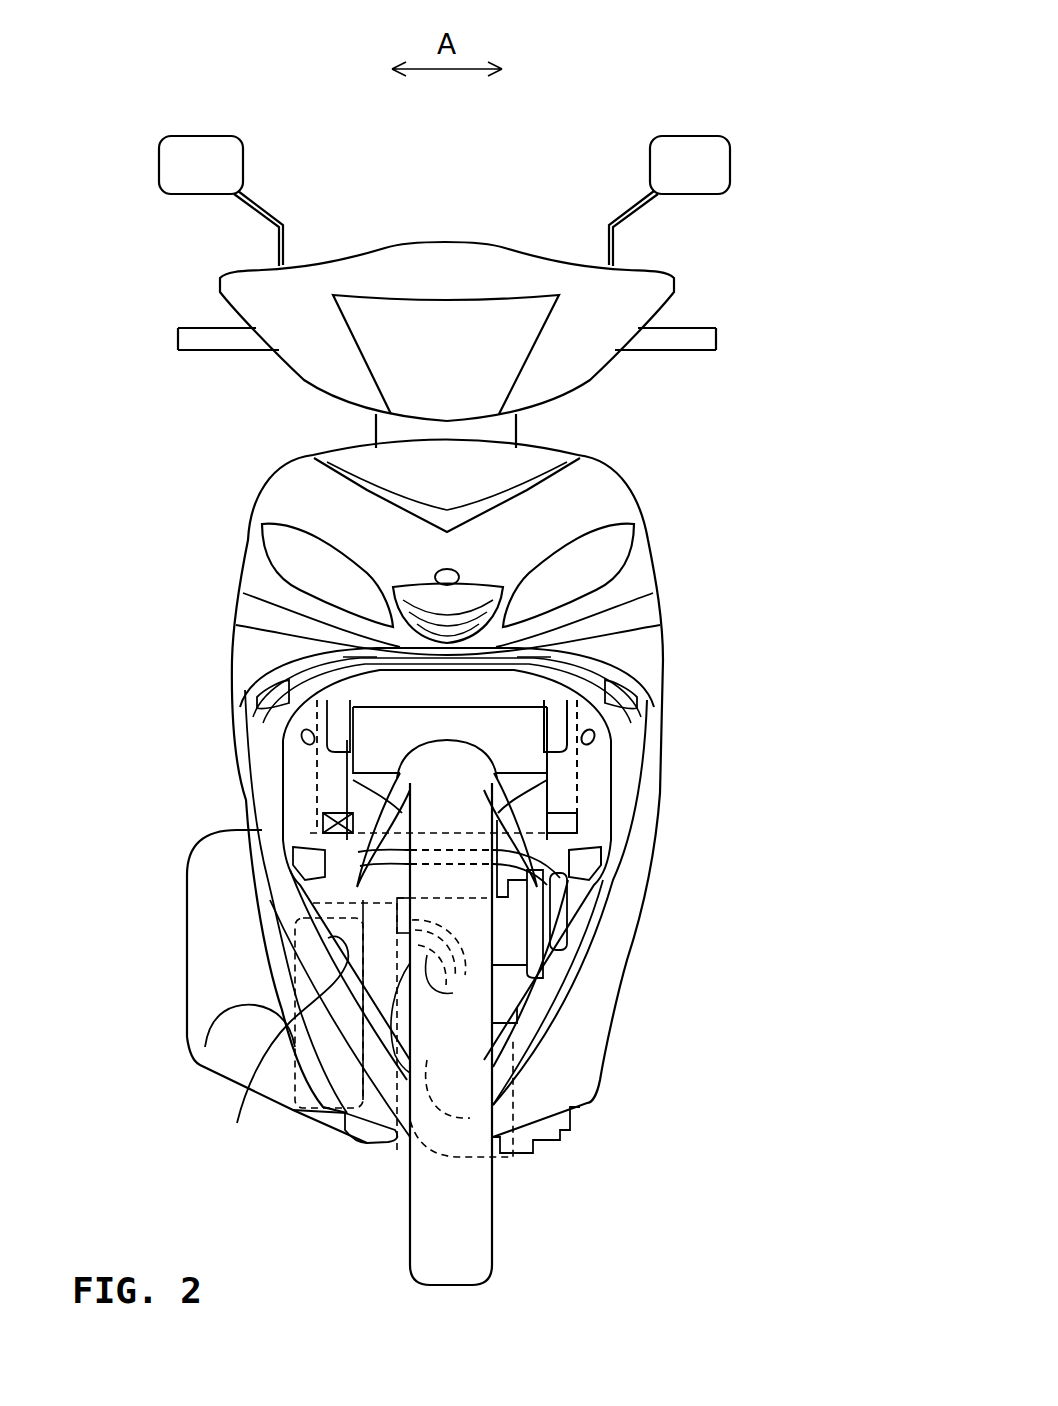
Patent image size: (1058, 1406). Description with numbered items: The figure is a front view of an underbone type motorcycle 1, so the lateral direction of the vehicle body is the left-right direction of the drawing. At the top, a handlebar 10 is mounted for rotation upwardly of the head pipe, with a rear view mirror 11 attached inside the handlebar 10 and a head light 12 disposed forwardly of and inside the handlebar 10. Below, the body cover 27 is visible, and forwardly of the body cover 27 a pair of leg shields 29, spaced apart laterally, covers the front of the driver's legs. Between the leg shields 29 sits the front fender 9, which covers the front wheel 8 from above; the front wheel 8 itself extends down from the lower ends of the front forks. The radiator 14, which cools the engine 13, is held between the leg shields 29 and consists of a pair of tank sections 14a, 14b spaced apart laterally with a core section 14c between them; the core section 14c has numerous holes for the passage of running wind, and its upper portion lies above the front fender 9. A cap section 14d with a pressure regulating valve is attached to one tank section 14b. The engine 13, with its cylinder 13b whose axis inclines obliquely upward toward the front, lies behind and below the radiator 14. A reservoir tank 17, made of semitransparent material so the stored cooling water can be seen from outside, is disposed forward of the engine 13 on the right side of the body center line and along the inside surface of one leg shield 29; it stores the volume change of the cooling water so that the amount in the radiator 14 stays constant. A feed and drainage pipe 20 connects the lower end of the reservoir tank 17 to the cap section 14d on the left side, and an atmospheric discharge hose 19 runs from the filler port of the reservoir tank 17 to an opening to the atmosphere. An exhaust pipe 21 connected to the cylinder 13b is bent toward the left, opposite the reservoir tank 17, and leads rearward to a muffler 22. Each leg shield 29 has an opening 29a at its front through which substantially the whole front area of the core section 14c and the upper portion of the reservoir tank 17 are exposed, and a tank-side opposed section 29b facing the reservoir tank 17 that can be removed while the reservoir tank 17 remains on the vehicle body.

The motorcycle 1 is at (861, 80).
The front wheel 8 is at (477, 1227).
The front fender 9 is at (467, 720).
The handlebar 10 is at (178, 340).
The rear view mirror 11 is at (202, 150).
The head light 12 is at (443, 340).
The engine 13 is at (510, 990).
The cylinder 13b is at (545, 872).
The radiator 14 is at (600, 620).
The tank section 14a is at (613, 686).
The tank section 14b is at (300, 798).
The core section 14c is at (300, 650).
The cap section 14d is at (262, 672).
The reservoir tank 17 is at (470, 1042).
The atmospheric discharge hose 19 is at (560, 862).
The feed and drainage pipe 20 is at (540, 880).
The exhaust pipe 21 is at (363, 1143).
The muffler 22 is at (209, 976).
The body cover 27 is at (630, 515).
The leg shield 29 is at (240, 717).
The opening 29a is at (262, 1166).
The tank-side opposed section 29b is at (560, 1090).